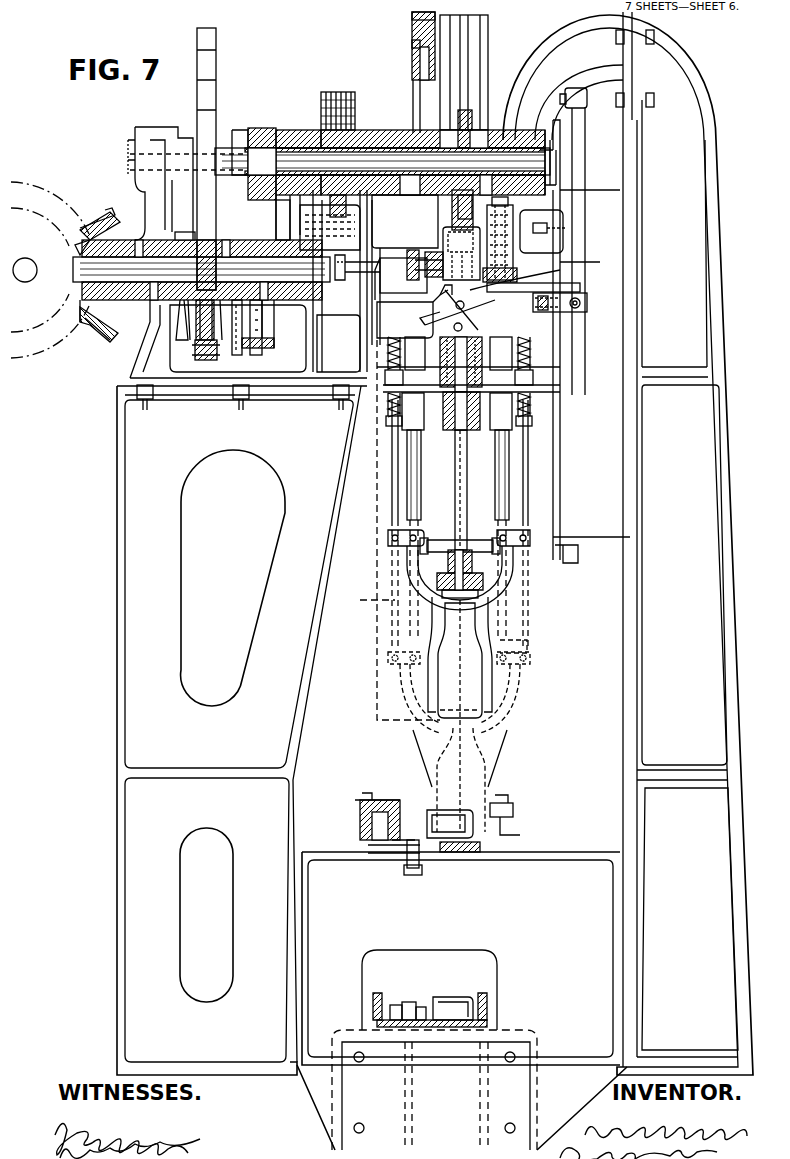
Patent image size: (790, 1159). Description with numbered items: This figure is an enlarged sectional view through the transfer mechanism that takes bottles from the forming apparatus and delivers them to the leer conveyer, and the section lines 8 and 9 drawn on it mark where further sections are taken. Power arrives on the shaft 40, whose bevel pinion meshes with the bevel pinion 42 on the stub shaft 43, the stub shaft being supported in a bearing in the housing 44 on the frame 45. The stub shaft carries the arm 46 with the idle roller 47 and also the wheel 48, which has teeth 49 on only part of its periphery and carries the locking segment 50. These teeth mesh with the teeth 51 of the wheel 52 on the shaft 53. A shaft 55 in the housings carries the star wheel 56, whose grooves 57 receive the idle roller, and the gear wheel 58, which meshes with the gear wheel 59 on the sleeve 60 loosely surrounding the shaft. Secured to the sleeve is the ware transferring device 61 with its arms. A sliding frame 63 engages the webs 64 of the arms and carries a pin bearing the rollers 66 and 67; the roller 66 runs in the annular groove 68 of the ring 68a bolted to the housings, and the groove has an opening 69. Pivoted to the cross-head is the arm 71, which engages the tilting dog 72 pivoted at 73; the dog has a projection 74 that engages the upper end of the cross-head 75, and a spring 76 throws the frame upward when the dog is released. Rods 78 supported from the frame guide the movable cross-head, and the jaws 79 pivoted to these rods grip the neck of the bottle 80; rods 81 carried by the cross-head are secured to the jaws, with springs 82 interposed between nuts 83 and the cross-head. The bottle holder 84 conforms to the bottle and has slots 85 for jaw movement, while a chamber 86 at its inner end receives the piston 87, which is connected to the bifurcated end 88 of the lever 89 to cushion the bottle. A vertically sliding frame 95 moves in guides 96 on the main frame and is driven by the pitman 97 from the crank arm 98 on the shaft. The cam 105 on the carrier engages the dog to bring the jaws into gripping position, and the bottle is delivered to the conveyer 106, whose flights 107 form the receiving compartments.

The section line 8- 8 is at (432, 16).
The section line 9- 9 is at (396, 292).
The shaft 40 is at (25, 262).
The bevel pinion 42 is at (82, 300).
The stub shaft 43 is at (105, 270).
The housing 44 is at (318, 335).
The frame 45 is at (120, 724).
The arm 46 is at (190, 325).
The idle roller 47 is at (207, 360).
The wheel 48 is at (262, 343).
The teeth 49 is at (262, 348).
The locking segment 50 is at (205, 230).
The teeth 51 is at (246, 130).
The wheel 52 is at (258, 130).
The shaft 53 is at (285, 148).
The shaft 55 is at (228, 162).
The star wheel 56 is at (216, 48).
The grooves 57 is at (205, 64).
The gear wheel 58 is at (337, 92).
The gear wheel 59 is at (405, 270).
The sleeve 60 is at (368, 140).
The ware transferring device 61 is at (462, 41).
The sliding frame 63 is at (460, 240).
The webs 64 is at (468, 450).
The roller 66 is at (411, 298).
The roller 67 is at (498, 240).
The annular groove 68 is at (430, 56).
The ring 68a is at (420, 55).
The opening 69 is at (380, 335).
The arm 71 is at (470, 300).
The tilting dog 72 is at (540, 288).
The pivot 73 is at (470, 318).
The projection 74 is at (468, 330).
The cross-head 75 is at (500, 385).
The spring 76 is at (392, 405).
The rods 78 is at (410, 467).
The jaws 79 is at (398, 548).
The bottle 80 is at (531, 778).
The rods 81 is at (392, 494).
The springs 82 is at (392, 368).
The nuts 83 is at (532, 425).
The bottle holder 84 is at (490, 685).
The slots 85 is at (488, 625).
The chamber 86 is at (478, 594).
The piston 87 is at (440, 589).
The bifurcated end 88 is at (393, 526).
The lever 89 is at (520, 526).
The sliding frame 95 is at (548, 237).
The guides 96 is at (560, 198).
The pitman 97 is at (580, 150).
The crank arm 98 is at (573, 133).
The cam 105 is at (412, 30).
The conveyer 106 is at (408, 828).
The flights 107 is at (473, 832).